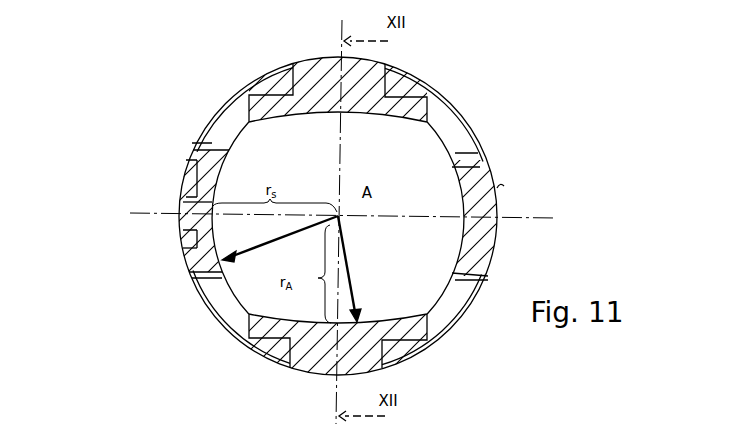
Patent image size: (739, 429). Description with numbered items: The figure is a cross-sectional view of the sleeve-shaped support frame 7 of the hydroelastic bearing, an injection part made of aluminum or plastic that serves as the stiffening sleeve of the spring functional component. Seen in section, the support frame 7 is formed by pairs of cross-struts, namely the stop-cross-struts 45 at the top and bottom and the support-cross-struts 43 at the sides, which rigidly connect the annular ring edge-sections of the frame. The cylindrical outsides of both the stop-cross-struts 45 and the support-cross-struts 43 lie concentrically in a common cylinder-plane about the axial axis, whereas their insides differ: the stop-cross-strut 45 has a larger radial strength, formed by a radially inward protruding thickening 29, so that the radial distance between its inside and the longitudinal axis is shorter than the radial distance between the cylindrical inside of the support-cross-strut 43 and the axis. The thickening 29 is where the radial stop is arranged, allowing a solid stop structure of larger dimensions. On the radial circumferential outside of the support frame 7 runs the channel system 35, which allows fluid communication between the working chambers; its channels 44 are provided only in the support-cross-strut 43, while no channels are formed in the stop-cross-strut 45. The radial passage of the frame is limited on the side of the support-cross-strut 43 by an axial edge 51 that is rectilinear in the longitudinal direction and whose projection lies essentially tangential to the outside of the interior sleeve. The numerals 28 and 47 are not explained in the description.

The support frame 7 is at (505, 183).
The bore 28 is at (447, 117).
The thickening 29 is at (228, 334).
The channel system 35 is at (180, 248).
The support-cross-strut 43 is at (192, 152).
The channels 44 is at (187, 253).
The stop-cross-strut 45 is at (302, 62).
The slot 47 is at (183, 182).
The axial edge 51 is at (476, 136).